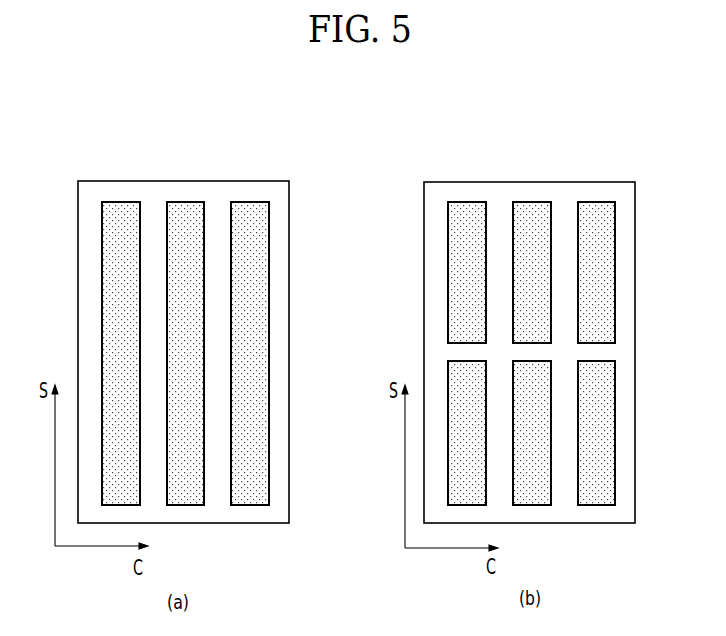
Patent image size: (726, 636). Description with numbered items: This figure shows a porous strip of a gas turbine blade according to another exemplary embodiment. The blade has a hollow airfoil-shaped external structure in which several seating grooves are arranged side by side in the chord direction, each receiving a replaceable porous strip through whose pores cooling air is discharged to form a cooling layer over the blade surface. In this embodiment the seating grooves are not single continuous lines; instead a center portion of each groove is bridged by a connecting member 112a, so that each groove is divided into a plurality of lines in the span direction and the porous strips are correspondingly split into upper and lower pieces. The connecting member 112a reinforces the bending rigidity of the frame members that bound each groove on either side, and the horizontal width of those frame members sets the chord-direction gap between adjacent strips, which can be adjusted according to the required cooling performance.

The connecting member 112a is at (602, 352).